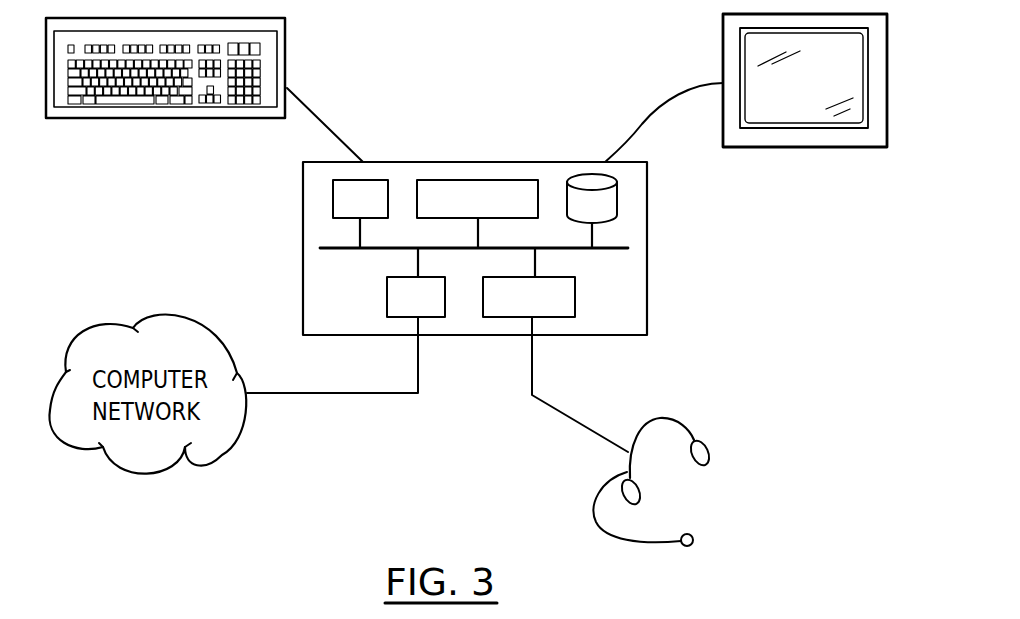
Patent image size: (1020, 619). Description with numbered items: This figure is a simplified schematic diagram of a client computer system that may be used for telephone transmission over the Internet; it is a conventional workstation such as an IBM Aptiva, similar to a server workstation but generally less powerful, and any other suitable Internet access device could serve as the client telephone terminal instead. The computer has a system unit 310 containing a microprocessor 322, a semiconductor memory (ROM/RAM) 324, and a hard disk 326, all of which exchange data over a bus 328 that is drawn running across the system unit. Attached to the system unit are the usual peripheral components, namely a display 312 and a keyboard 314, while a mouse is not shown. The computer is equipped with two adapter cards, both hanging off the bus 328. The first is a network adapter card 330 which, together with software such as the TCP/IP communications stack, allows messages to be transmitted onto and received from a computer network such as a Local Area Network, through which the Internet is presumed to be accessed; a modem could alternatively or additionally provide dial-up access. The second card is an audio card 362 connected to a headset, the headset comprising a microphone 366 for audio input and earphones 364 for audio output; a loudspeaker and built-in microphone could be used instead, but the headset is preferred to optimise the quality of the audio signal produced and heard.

The system unit 310 is at (647, 229).
The display 312 is at (723, 44).
The keyboard 314 is at (165, 118).
The microprocessor 322 is at (420, 133).
The semi-conductor memory (ROM/RAM) 324 is at (476, 180).
The hard disk 326 is at (584, 176).
The bus 328 is at (334, 249).
The network adapter card 330 is at (400, 317).
The audio card 362 is at (515, 317).
The earphones 364 is at (691, 433).
The microphone 366 is at (694, 540).